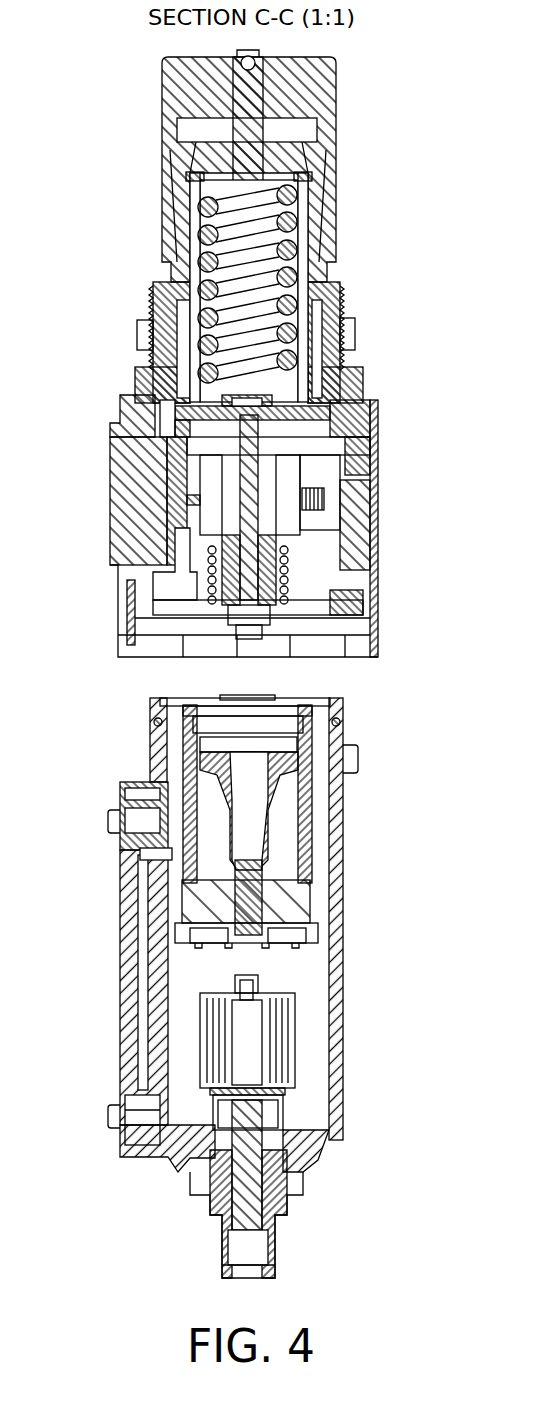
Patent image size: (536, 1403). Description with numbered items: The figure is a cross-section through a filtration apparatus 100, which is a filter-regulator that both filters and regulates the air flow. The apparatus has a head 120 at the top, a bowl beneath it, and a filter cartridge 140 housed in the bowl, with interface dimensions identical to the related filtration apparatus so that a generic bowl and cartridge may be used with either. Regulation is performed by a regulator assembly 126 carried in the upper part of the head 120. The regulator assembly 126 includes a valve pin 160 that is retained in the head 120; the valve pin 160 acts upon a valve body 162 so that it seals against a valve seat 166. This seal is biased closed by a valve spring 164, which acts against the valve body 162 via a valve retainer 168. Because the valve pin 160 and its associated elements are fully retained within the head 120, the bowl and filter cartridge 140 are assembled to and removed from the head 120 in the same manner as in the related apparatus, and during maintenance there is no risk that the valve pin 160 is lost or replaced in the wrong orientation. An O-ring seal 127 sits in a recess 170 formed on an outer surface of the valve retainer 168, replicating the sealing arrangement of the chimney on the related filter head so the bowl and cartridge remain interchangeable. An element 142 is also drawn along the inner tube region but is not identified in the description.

The filtration apparatus 100 is at (135, 73).
The regulator assembly 126 is at (162, 233).
The head 120 is at (110, 471).
The O-ring seal 127 is at (190, 602).
The valve pin 160 is at (318, 476).
The valve seat 166 is at (262, 538).
The valve body 162 is at (287, 557).
The valve spring 164 is at (284, 584).
The valve retainer 168 is at (295, 640).
The recess 170 is at (215, 598).
The inner tube 142 is at (179, 786).
The filter cartridge 140 is at (172, 882).